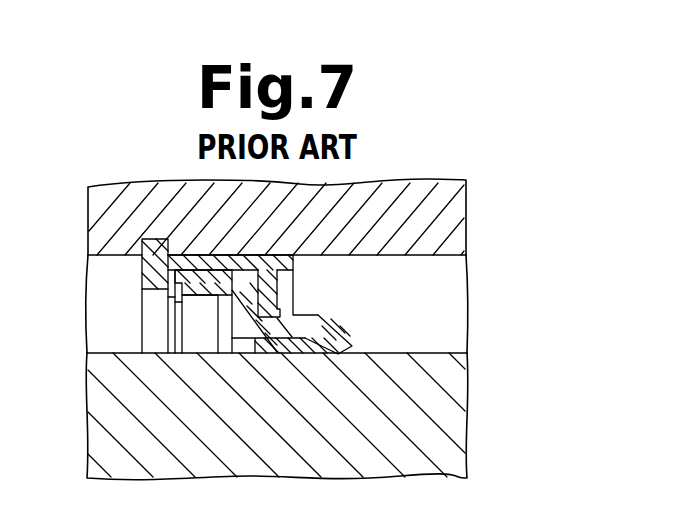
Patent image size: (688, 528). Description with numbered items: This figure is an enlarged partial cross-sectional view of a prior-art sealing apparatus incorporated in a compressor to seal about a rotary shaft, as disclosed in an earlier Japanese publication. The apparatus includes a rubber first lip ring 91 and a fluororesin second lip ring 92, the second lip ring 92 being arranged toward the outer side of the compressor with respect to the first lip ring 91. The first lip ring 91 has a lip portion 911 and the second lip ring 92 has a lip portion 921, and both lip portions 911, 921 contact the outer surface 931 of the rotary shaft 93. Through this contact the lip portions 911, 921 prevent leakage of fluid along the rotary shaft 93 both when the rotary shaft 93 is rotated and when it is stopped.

The first lip ring 91 is at (290, 268).
The lip portion 911 is at (335, 324).
The second lip ring 92 is at (220, 314).
The lip portion 921 is at (275, 344).
The rotary shaft 93 is at (455, 424).
The outer surface 931 is at (447, 342).